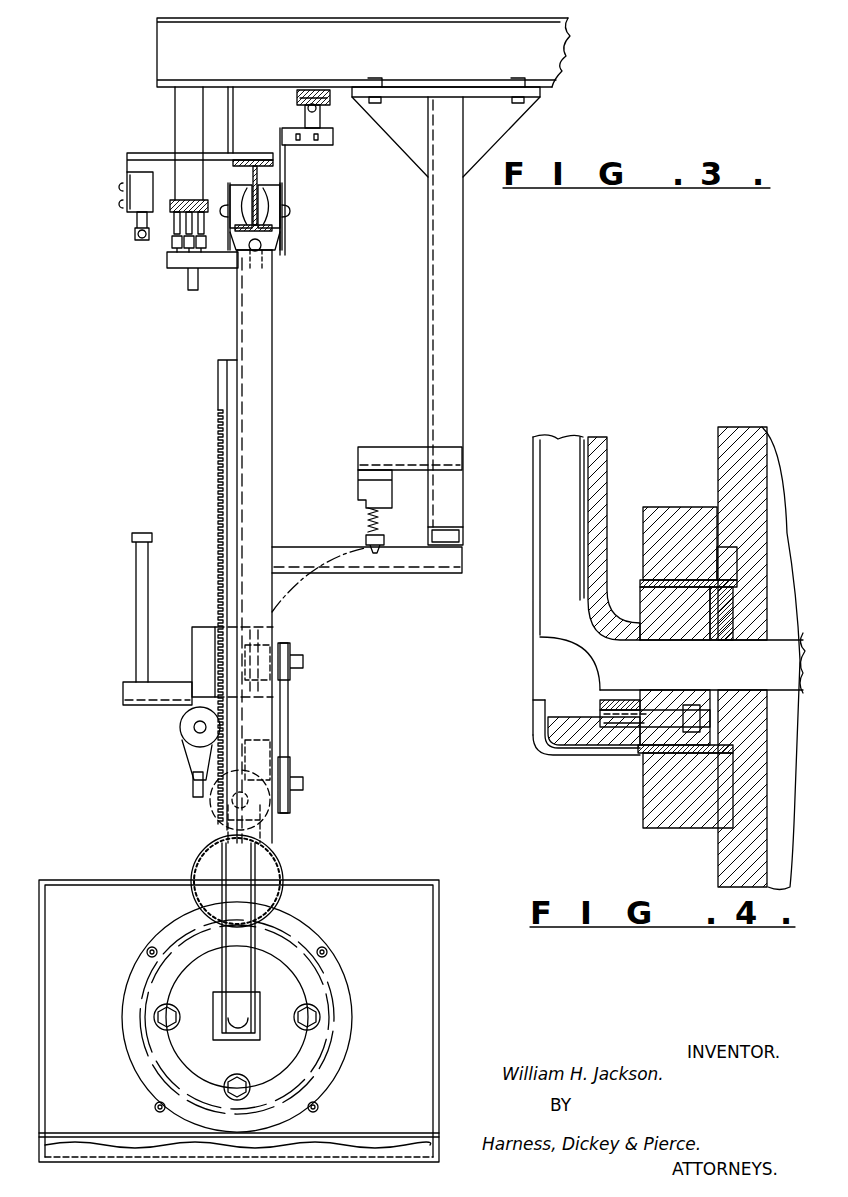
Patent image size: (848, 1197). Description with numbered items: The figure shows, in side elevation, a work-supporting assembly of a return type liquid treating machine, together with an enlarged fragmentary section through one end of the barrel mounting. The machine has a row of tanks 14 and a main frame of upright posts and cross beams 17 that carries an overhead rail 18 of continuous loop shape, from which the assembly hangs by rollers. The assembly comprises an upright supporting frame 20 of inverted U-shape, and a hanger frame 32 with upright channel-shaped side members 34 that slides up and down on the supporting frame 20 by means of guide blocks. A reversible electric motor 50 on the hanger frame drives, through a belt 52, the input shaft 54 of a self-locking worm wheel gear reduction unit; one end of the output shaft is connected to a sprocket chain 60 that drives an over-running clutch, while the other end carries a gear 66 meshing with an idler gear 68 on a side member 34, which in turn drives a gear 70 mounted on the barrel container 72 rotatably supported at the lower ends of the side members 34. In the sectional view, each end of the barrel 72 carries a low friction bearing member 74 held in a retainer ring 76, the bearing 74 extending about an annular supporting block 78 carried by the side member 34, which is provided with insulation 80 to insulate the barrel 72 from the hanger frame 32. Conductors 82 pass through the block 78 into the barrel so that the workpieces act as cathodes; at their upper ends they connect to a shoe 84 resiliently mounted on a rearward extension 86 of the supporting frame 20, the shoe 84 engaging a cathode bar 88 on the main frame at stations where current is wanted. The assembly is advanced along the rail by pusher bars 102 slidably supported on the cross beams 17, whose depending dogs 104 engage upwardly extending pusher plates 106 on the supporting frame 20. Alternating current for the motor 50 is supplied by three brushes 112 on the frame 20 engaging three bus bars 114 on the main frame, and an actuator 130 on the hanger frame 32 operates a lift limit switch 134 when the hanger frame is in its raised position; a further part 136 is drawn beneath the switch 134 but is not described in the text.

In FIG. 3, the tanks 14 is at (440, 905).
In FIG. 3, the cross beams 17 is at (545, 52).
In FIG. 3, the overhead rail 18 is at (257, 185).
In FIG. 3, the supporting frame 20 is at (281, 336).
In FIG. 3, the hanger frame 32 is at (208, 863).
In FIG. 3, the side members 34 is at (205, 903).
In FIG. 4, the side members 34 is at (553, 692).
In FIG. 3, the reversible electric motor 50 is at (205, 630).
In FIG. 3, the belt 52 is at (285, 712).
In FIG. 3, the input shaft 54 is at (303, 782).
In FIG. 3, the sprocket chain 60 is at (185, 758).
In FIG. 3, the gear 66 is at (265, 828).
In FIG. 3, the idler gear 68 is at (270, 875).
In FIG. 3, the gear 70 is at (265, 935).
In FIG. 4, the barrel container 72 is at (735, 848).
In FIG. 4, the bearing member 74 is at (672, 578).
In FIG. 4, the retainer ring 76 is at (688, 520).
In FIG. 4, the annular supporting block 78 is at (697, 620).
In FIG. 4, the insulation 80 is at (592, 758).
In FIG. 4, the conductors 82 is at (555, 605).
In FIG. 3, the shoe 84 is at (358, 479).
In FIG. 3, the rearward extension 86 is at (292, 552).
In FIG. 3, the cathode bar 88 is at (372, 478).
In FIG. 3, the pusher bars 102 is at (312, 92).
In FIG. 3, the depending dogs 104 is at (305, 100).
In FIG. 3, the pusher plates 106 is at (326, 145).
In FIG. 3, the brushes 112 is at (190, 256).
In FIG. 3, the bus bars 114 is at (175, 225).
In FIG. 3, the actuator 130 is at (140, 592).
In FIG. 3, the lift limit switch 134 is at (138, 178).
In FIG. 3, the plunger 136 is at (135, 224).